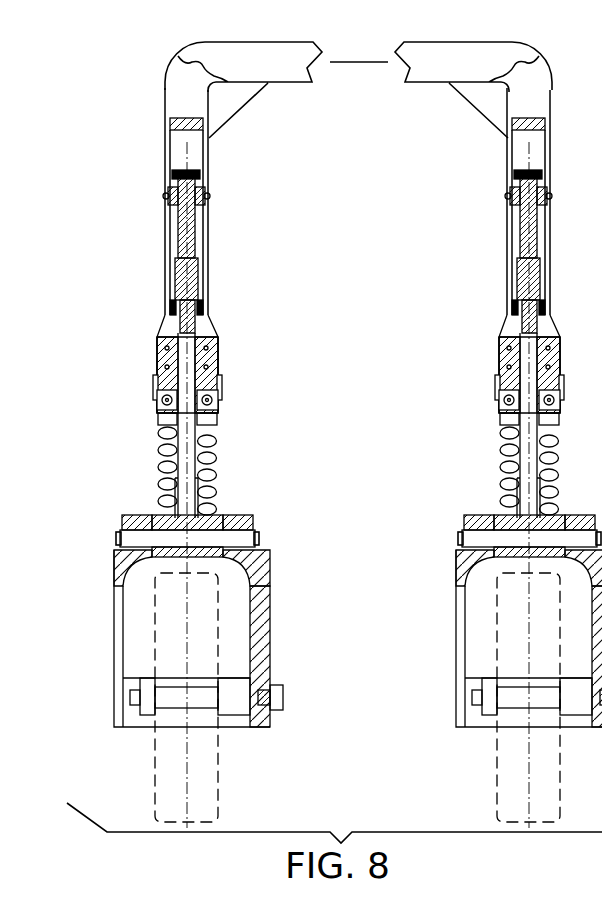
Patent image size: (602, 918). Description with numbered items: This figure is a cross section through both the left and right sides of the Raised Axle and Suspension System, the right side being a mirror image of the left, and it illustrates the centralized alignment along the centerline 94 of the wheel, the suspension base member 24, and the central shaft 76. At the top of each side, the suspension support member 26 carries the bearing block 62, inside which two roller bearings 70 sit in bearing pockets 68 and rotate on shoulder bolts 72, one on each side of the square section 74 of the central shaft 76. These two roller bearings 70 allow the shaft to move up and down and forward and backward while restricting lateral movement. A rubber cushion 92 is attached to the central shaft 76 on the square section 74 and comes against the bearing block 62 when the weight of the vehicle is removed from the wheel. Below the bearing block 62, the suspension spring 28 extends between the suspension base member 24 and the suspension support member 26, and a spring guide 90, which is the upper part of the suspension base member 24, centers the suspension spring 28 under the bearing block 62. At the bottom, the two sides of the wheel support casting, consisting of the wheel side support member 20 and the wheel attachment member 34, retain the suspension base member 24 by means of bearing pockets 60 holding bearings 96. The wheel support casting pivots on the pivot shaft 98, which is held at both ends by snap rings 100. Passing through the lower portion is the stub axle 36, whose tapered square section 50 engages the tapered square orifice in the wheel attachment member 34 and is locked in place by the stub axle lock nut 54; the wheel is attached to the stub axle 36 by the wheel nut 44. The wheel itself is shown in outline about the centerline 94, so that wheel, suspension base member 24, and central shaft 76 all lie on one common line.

The wheel side support member 20 is at (114, 665).
The suspension base member 24 is at (222, 514).
The suspension support member 26 is at (165, 242).
The suspension spring 28 is at (165, 480).
The wheel attachment member 34 is at (268, 632).
The stub axle 36 is at (233, 708).
The wheel nut 44 is at (147, 716).
The tapered square section 50 is at (267, 727).
The stub axle lock nut 54 is at (283, 698).
The bearing pockets 60 is at (132, 517).
The bearing block 62 is at (158, 362).
The bearing pockets 68 is at (162, 403).
The roller bearings 70 is at (153, 383).
The shoulder bolts 72 is at (158, 425).
The square section 74 is at (218, 355).
The central shaft 76 is at (196, 282).
The spring guide 90 is at (220, 472).
The rubber cushion 92 is at (166, 315).
The centerline 94 is at (187, 648).
The bearings 96 is at (124, 583).
The pivot shaft 98 is at (117, 536).
The snap rings 100 is at (120, 528).